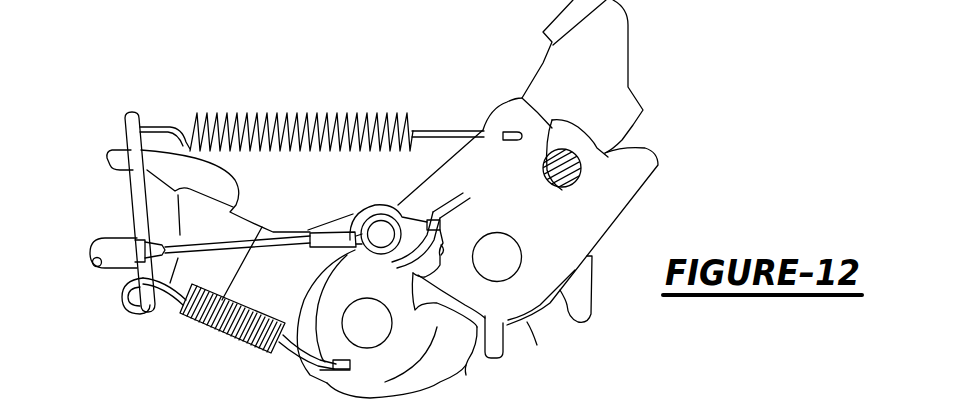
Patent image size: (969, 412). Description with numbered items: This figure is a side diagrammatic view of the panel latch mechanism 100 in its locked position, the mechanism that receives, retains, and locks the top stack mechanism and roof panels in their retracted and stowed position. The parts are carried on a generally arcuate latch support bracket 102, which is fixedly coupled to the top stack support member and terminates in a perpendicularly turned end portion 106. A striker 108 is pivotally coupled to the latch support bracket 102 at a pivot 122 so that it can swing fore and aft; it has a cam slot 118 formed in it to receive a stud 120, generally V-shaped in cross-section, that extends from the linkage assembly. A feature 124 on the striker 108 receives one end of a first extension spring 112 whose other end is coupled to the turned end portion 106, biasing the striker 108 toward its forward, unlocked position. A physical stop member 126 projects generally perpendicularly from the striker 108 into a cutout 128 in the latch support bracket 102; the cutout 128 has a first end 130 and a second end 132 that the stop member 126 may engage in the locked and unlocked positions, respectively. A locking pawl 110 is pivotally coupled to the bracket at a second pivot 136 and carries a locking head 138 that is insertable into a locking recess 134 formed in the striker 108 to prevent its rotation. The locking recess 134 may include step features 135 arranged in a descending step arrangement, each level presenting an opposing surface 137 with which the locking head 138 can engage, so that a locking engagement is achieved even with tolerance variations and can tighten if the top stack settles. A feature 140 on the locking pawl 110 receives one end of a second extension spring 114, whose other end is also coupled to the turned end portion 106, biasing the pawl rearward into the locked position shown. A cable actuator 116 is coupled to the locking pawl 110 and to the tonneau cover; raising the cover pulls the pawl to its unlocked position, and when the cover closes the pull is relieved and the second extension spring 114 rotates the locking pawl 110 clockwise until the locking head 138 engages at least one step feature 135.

The panel latch mechanism 100 is at (388, 58).
The latch support bracket 102 is at (633, 125).
The perpendicularly turned end portion 106 is at (131, 213).
The striker 108 is at (632, 203).
The locking pawl 110 is at (367, 203).
The first extension spring 112 is at (232, 112).
The second extension spring 114 is at (222, 331).
The cable actuator 116 is at (100, 272).
The cam slot 118 is at (597, 148).
The stud 120 is at (573, 127).
The pivot 122 is at (522, 252).
The feature 124 is at (522, 133).
The physical stop member 126 is at (493, 360).
The cutout 128 is at (508, 318).
The first end 130 is at (466, 365).
The second end 132 is at (583, 327).
The locking recess 134 is at (447, 243).
The step features 135 is at (466, 200).
The pivot 136 is at (350, 300).
The opposing surface 137 is at (399, 263).
The locking head 138 is at (440, 278).
The feature 140 is at (326, 387).